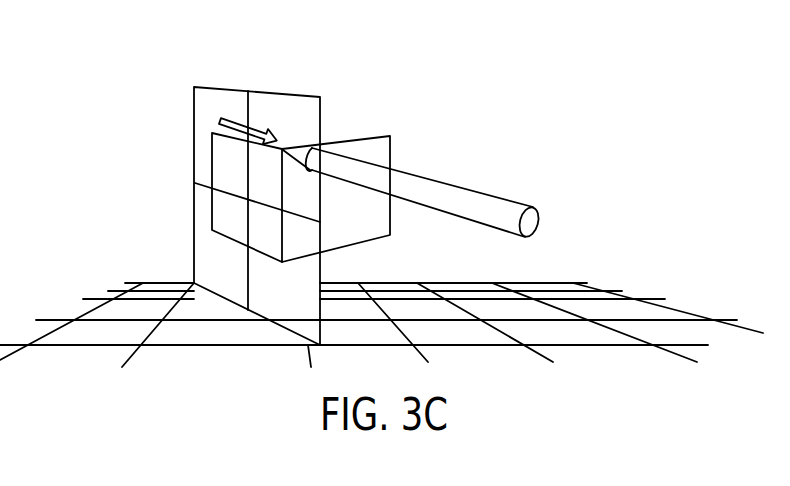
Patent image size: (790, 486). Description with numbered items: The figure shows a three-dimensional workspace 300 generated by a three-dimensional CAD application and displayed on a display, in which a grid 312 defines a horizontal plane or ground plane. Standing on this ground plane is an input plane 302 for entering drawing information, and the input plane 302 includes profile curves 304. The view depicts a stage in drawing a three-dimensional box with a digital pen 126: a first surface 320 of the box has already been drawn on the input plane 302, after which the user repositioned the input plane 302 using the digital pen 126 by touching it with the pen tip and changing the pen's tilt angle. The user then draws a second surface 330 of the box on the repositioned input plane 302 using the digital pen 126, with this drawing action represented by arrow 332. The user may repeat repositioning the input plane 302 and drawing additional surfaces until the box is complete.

The 3D workspace 300 is at (155, 57).
The input plane 302 is at (200, 87).
The profile curves 304 is at (195, 183).
The second surface 330 is at (212, 157).
The first surface 320 is at (365, 136).
The arrow 332 is at (225, 116).
The digital pen 126 is at (465, 188).
The grid 312 is at (580, 253).